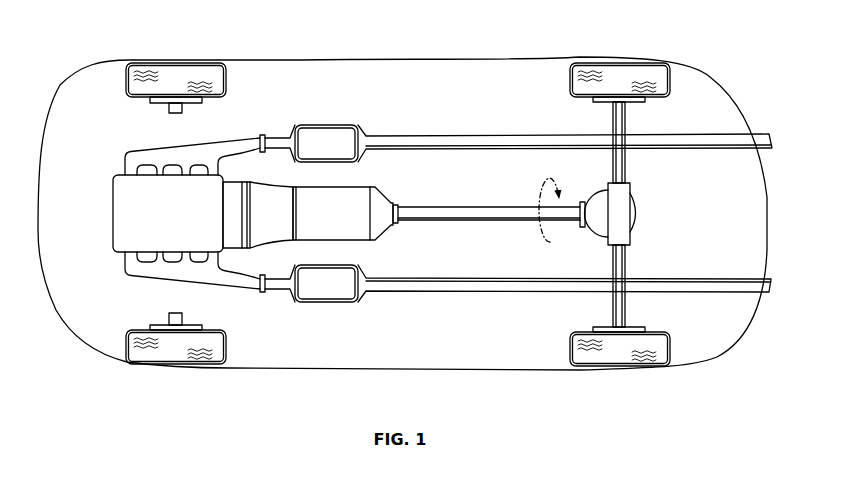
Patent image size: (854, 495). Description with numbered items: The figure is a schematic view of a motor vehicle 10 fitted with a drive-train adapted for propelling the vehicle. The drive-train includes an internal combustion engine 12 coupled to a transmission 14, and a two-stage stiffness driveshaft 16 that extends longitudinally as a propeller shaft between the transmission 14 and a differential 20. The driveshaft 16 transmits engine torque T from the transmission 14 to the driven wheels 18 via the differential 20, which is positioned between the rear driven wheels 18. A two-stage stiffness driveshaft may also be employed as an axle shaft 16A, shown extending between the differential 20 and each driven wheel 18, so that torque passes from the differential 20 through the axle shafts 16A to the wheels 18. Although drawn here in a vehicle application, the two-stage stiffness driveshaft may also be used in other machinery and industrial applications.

The motor vehicle 10 is at (466, 52).
The internal combustion engine 12 is at (111, 230).
The transmission 14 is at (309, 250).
The two-stage stiffness driveshaft 16 is at (461, 221).
The axle shaft 16A is at (626, 123).
The driven wheels 18 is at (622, 72).
The differential 20 is at (641, 212).
The engine torque T is at (535, 197).